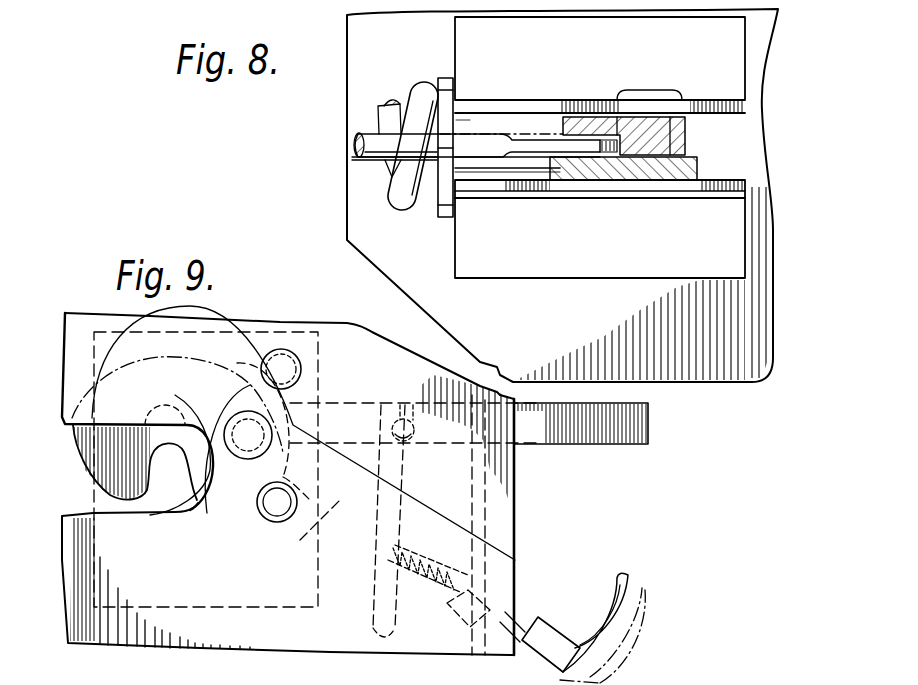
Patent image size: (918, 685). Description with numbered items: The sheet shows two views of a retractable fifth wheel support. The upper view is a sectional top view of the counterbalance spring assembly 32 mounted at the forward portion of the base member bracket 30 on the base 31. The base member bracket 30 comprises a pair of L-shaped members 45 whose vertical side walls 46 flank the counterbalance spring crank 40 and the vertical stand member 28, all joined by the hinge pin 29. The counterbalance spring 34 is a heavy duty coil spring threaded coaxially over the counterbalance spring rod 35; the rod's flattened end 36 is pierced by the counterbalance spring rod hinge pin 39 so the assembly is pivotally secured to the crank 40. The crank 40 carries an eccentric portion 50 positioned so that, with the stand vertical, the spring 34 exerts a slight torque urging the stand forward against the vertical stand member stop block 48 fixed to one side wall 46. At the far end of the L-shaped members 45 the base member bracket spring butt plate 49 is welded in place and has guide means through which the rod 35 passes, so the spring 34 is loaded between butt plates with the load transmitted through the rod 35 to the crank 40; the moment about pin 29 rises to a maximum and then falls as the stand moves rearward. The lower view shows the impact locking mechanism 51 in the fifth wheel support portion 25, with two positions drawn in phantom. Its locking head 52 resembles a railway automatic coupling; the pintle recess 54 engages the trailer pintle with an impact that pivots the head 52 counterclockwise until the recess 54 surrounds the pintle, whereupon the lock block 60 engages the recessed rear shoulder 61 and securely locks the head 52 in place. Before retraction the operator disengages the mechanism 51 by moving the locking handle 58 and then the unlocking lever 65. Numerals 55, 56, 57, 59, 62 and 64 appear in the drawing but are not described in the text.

In FIG. 9, the fifth wheel support portion 25 is at (515, 513).
In FIG. 8, the vertical stand member 28 is at (650, 182).
In FIG. 8, the hinge pin 29 is at (657, 98).
In FIG. 8, the base member bracket 30 is at (770, 147).
In FIG. 8, the base 31 is at (804, 2).
In FIG. 8, the counterbalance spring assembly 32 is at (368, 84).
In FIG. 8, the counterbalance spring 34 is at (415, 110).
In FIG. 8, the counterbalance spring rod 35 is at (480, 145).
In FIG. 8, the flattened end 36 is at (540, 140).
In FIG. 8, the counterbalance spring rod hinge pin 39 is at (578, 165).
In FIG. 8, the counterbalance spring crank 40 is at (655, 133).
In FIG. 8, the L-shaped members 45 is at (502, 47).
In FIG. 8, the vertical side walls 46 is at (527, 100).
In FIG. 8, the vertical stand member stop block 48 is at (490, 192).
In FIG. 8, the base member bracket spring butt plate 49 is at (437, 192).
In FIG. 8, the eccentric portion 50 is at (572, 128).
In FIG. 9, the impact locking mechanism 51 is at (334, 350).
In FIG. 9, the locking head 52 is at (114, 452).
In FIG. 9, the pintle recess 54 is at (165, 455).
In FIG. 9, the pivot hole 55 is at (237, 435).
In FIG. 9, the upper hole 56 is at (285, 355).
In FIG. 9, the lower hole 57 is at (268, 518).
In FIG. 9, the locking handle 58 is at (618, 578).
In FIG. 9, the block 59 is at (525, 615).
In FIG. 9, the lock block 60 is at (345, 598).
In FIG. 9, the recessed rear shoulder 61 is at (330, 523).
In FIG. 9, the spring 62 is at (430, 520).
In FIG. 9, the pin 64 is at (416, 435).
In FIG. 9, the unlocking lever 65 is at (603, 437).